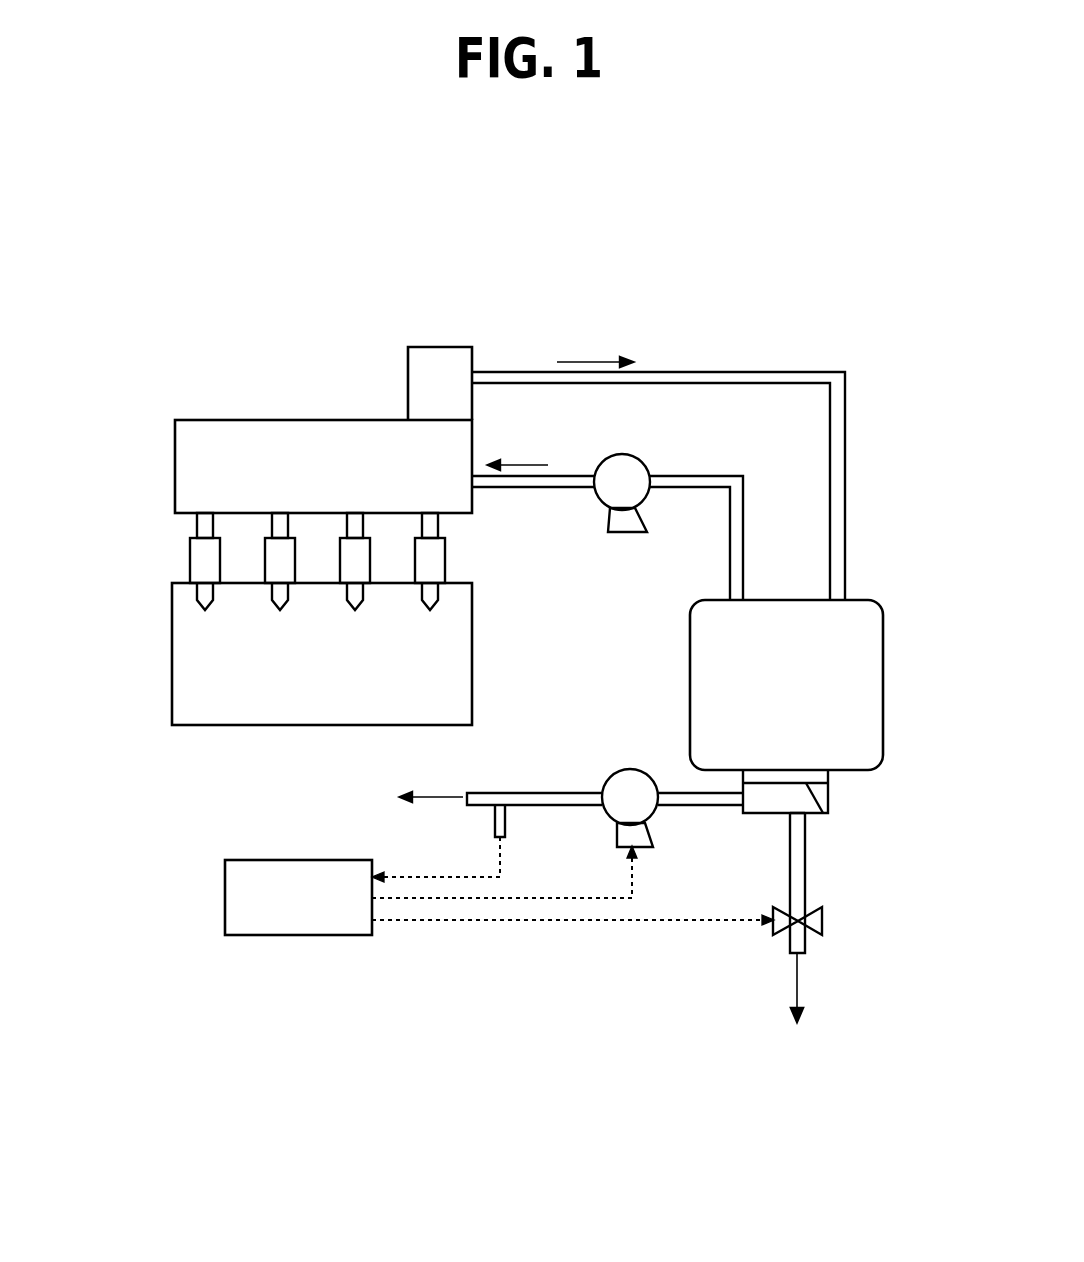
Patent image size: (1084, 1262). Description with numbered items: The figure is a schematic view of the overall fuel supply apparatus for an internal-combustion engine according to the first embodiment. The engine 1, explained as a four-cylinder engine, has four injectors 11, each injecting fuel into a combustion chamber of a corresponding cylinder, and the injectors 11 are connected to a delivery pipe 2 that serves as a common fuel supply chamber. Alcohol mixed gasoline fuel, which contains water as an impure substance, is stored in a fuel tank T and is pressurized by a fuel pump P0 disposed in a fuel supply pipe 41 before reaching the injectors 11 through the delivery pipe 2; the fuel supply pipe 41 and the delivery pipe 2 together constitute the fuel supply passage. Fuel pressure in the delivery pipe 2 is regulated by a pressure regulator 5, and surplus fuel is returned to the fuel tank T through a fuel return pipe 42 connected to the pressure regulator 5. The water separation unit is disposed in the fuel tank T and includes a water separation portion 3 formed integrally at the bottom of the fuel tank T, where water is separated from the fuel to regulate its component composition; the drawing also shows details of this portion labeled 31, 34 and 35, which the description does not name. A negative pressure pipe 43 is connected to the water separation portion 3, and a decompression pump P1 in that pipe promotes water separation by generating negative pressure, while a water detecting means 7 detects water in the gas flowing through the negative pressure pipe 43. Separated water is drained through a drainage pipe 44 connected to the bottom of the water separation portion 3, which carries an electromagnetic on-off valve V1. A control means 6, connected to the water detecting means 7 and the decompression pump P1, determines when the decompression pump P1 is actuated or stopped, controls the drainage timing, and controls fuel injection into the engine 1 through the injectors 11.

The engine 1 is at (188, 727).
The delivery pipe 2 is at (318, 420).
The water separation portion 3 is at (745, 826).
The pressure regulator 5 is at (447, 347).
The control means 6 is at (225, 893).
The water detecting means 7 is at (492, 823).
The injectors 11 is at (188, 562).
The separator housing 31 is at (820, 815).
The separator inlet portion 34 is at (818, 780).
The separating membrane 35 is at (775, 800).
The fuel supply pipe 41 is at (528, 488).
The fuel return pipe 42 is at (748, 372).
The negative pressure pipe 43 is at (540, 792).
The drainage pipe 44 is at (788, 937).
The fuel pump P0 is at (640, 458).
The decompression pump P1 is at (607, 780).
The fuel tank T is at (690, 635).
The electromagnetic valve V1 is at (823, 923).